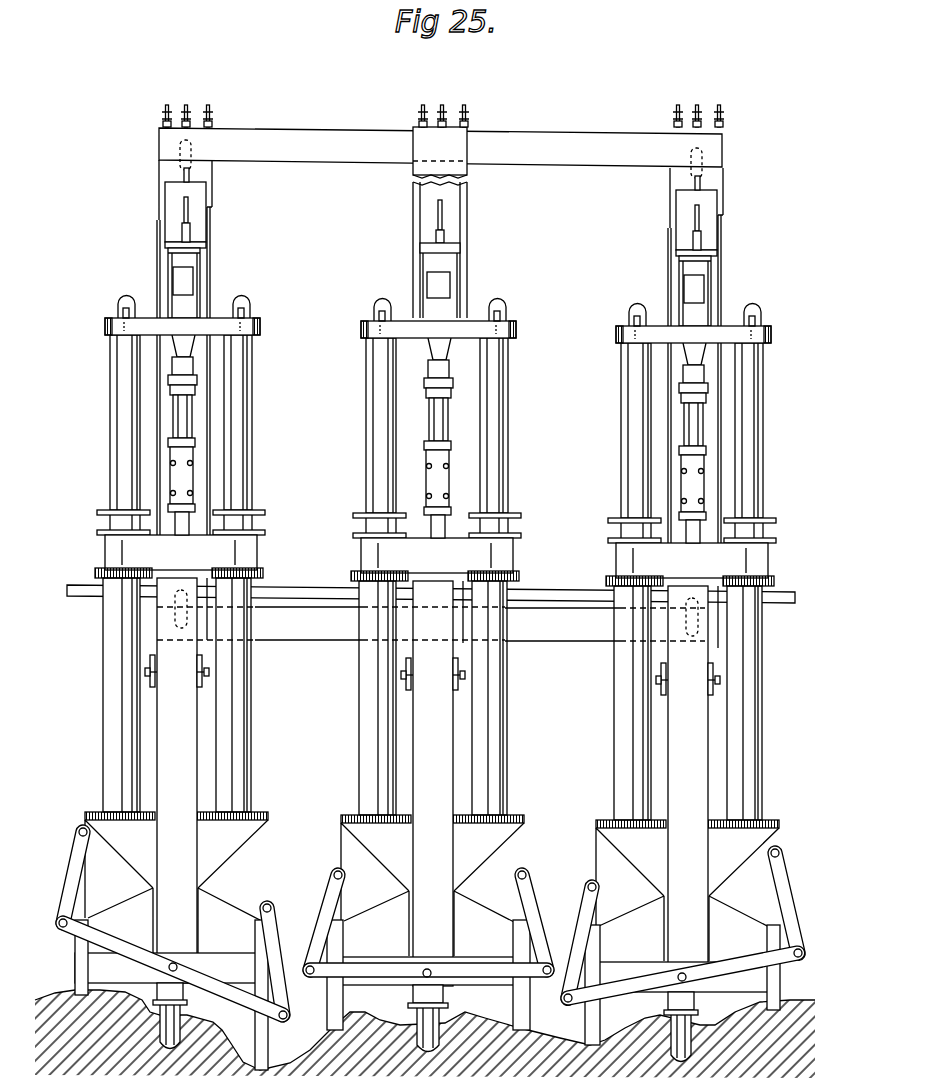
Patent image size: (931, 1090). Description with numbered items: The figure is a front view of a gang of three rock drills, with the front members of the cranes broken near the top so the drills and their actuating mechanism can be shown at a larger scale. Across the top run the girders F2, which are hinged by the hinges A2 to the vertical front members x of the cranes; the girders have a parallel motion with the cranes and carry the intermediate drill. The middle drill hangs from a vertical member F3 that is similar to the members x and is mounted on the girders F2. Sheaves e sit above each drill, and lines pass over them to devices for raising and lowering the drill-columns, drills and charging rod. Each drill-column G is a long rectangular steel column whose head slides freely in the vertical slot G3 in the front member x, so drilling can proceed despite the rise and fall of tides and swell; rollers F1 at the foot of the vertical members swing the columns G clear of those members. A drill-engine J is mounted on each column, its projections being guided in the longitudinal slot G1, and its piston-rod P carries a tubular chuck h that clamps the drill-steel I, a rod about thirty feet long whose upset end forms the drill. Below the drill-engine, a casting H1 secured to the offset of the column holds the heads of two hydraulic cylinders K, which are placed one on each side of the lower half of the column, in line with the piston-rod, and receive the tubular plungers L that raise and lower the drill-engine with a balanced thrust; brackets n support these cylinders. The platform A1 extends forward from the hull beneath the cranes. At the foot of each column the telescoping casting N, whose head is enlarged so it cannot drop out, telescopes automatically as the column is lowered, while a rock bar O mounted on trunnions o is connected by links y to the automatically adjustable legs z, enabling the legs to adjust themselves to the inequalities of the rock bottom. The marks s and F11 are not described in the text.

The sheaves e is at (208, 105).
The girders F2 is at (277, 128).
The rollers F1 is at (157, 258).
The vertical member F3 is at (412, 190).
The bracket F'' F11 is at (212, 690).
The hinges A2 is at (182, 168).
The platform A1 is at (72, 602).
The drill-column G is at (165, 214).
The longitudinal slot G1 is at (190, 214).
The vertical slot G3 is at (182, 178).
The drill-engine J is at (188, 284).
The vertical front members x is at (213, 184).
The cross head s is at (105, 329).
The plungers L is at (110, 383).
The piston-rod P is at (195, 415).
The tubular chuck h is at (210, 478).
The drill-steel I is at (186, 525).
The casting H1 is at (257, 553).
The hydraulic cylinders K is at (103, 774).
The brackets n is at (120, 863).
The links y is at (75, 870).
The rock bar O is at (63, 940).
The trunnions o is at (170, 973).
The telescoping casting N is at (195, 1012).
The automatically adjustable legs z is at (327, 1004).